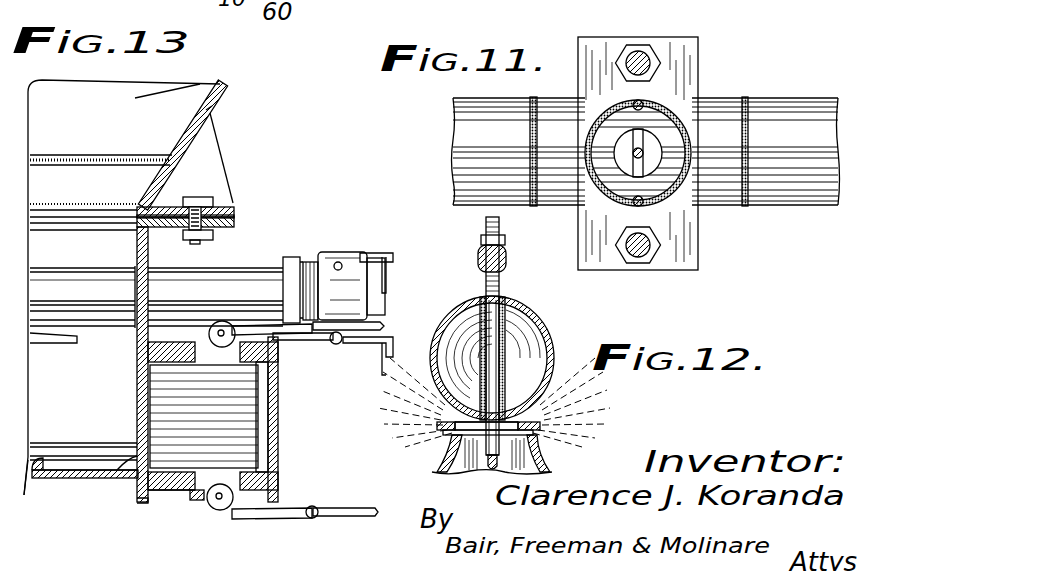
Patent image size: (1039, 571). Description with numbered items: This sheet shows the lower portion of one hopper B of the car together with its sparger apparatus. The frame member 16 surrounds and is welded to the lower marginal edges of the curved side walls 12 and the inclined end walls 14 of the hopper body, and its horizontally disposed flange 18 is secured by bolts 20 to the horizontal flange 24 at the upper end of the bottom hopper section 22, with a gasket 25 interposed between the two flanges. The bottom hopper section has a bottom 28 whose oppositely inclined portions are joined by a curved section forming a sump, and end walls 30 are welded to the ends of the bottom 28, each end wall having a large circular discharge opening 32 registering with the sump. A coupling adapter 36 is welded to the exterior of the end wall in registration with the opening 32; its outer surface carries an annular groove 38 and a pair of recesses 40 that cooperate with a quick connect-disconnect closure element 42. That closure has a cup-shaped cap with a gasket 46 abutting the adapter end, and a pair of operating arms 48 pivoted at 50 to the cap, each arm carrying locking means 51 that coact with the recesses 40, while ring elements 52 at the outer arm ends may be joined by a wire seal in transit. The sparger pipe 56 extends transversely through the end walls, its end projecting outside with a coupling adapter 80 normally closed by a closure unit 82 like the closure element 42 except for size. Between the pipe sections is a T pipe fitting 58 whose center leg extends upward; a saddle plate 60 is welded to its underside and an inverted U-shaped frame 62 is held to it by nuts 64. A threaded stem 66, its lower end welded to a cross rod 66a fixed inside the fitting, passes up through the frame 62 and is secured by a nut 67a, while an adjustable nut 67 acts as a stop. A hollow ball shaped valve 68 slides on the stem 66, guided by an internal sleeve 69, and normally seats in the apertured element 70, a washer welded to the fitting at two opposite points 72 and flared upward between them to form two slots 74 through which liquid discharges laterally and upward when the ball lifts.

In FIG. 13, the hopper B is at (190, 92).
In FIG. 13, the inclined end wall 14 is at (150, 92).
In FIG. 13, the curved side wall 12 is at (228, 90).
In FIG. 13, the frame member 16 is at (222, 145).
In FIG. 13, the horizontally disposed flange 18 is at (233, 205).
In FIG. 13, the gasket 25 is at (236, 216).
In FIG. 13, the horizontal flange 24 is at (236, 226).
In FIG. 13, the bolt 20 is at (197, 197).
In FIG. 13, the bottom hopper section 22 is at (152, 248).
In FIG. 13, the coupling adapter 80 is at (296, 258).
In FIG. 13, the quick connect-disconnect closure unit 82 is at (345, 284).
In FIG. 13, the ring element 52 is at (372, 324).
In FIG. 13, the operating arm 48 is at (283, 336).
In FIG. 13, the pivotal connection 50 is at (224, 322).
In FIG. 13, the locking means 51 is at (224, 346).
In FIG. 13, the recess 40 is at (232, 355).
In FIG. 13, the closure element 42 is at (282, 403).
In FIG. 13, the gasket 46 is at (272, 472).
In FIG. 13, the bottom 28 is at (38, 492).
In FIG. 13, the discharge opening 32 is at (135, 470).
In FIG. 13, the end wall 30 is at (145, 503).
In FIG. 13, the coupling adapter 36 is at (175, 492).
In FIG. 13, the annular groove 38 is at (192, 502).
In FIG. 11, the saddle plate 60 is at (690, 55).
In FIG. 11, the pipe 56 is at (478, 206).
In FIG. 11, the T pipe fitting 58 is at (718, 100).
In FIG. 12, the T pipe fitting 58 is at (548, 462).
In FIG. 11, the apertured element 70 is at (612, 118).
In FIG. 12, the apertured element 70 is at (550, 420).
In FIG. 11, the threaded stem 66 is at (645, 145).
In FIG. 12, the threaded stem 66 is at (500, 332).
In FIG. 11, the cross rod 66a is at (645, 163).
In FIG. 12, the cross rod 66a is at (488, 466).
In FIG. 11, the inverted U-shaped frame 62 is at (646, 58).
In FIG. 12, the inverted U-shaped frame 62 is at (480, 276).
In FIG. 11, the nut 64 is at (643, 258).
In FIG. 11, the weld point 72 is at (645, 103).
In FIG. 12, the slot 74 is at (430, 432).
In FIG. 12, the nut 67 is at (500, 292).
In FIG. 12, the nut 67a is at (481, 240).
In FIG. 12, the ball shaped valve 68 is at (530, 332).
In FIG. 12, the sleeve 69 is at (503, 355).